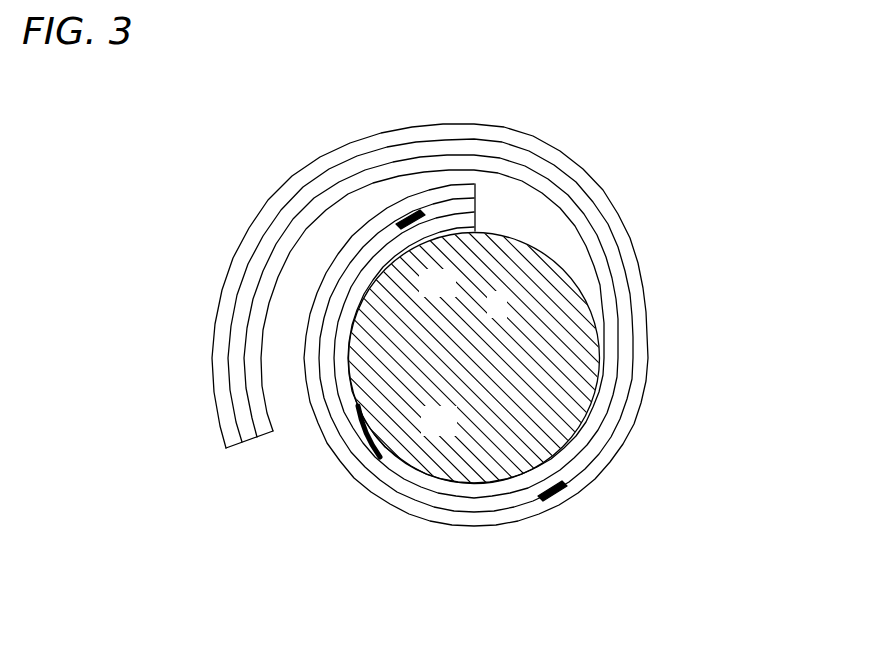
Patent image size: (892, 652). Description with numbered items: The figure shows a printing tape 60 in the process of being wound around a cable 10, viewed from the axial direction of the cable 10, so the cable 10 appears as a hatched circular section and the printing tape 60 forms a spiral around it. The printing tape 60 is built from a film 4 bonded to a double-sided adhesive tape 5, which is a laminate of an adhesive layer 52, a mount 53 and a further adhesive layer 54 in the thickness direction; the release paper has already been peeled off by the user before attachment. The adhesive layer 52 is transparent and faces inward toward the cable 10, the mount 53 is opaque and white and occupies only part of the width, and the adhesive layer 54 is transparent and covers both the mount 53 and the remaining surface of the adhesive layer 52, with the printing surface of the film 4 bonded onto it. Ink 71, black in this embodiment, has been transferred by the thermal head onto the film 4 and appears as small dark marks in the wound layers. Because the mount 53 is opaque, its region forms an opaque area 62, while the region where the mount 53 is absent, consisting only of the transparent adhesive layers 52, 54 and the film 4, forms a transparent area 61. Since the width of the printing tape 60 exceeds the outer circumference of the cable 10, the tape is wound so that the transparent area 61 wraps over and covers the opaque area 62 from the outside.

The film 4 is at (222, 362).
The double-sided adhesive tape 5 is at (385, 373).
The cable 10 is at (522, 408).
The adhesive layer 52 is at (257, 418).
The mount 53 is at (398, 238).
The adhesive layer 54 is at (237, 386).
The printing tape 60 is at (420, 352).
The transparent area 61 is at (256, 189).
The opaque area 62 is at (348, 212).
The ink 71 is at (412, 216).